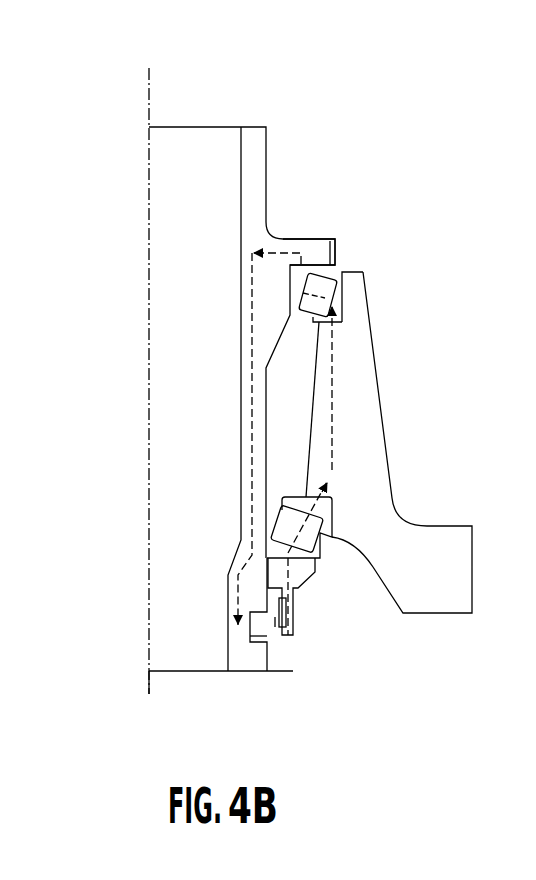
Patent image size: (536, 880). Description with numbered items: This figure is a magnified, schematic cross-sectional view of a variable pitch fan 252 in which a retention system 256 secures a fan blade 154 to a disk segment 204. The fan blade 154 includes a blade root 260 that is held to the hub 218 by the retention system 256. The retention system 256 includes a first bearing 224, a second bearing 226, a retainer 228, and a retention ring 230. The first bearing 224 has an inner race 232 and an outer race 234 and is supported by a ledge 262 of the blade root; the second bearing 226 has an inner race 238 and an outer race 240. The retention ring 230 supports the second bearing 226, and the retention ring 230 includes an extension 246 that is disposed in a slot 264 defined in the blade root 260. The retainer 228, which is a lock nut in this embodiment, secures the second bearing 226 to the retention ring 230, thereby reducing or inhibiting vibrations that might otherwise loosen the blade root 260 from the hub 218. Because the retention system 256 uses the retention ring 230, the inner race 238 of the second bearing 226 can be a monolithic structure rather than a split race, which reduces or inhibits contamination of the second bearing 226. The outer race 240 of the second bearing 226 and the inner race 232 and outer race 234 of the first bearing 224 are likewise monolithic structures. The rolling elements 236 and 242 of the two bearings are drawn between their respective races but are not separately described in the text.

The variable pitch fan 252 is at (131, 97).
The fan blade 154 is at (243, 142).
The inner race 232 is at (297, 280).
The first bearing 224 is at (329, 282).
The ledge 262 is at (332, 241).
The retention system 256 is at (359, 251).
The outer race 234 is at (340, 304).
The first roller 236 is at (323, 292).
The disk segment 204 is at (358, 398).
The hub 218 is at (410, 553).
The outer race 240 is at (306, 499).
The second bearing 226 is at (322, 553).
The second roller 242 is at (290, 527).
The inner race 238 is at (274, 545).
The retainer 228 is at (293, 627).
The retention ring 230 is at (278, 642).
The extension 246 is at (261, 624).
The slot 264 is at (246, 635).
The blade root 260 is at (235, 663).